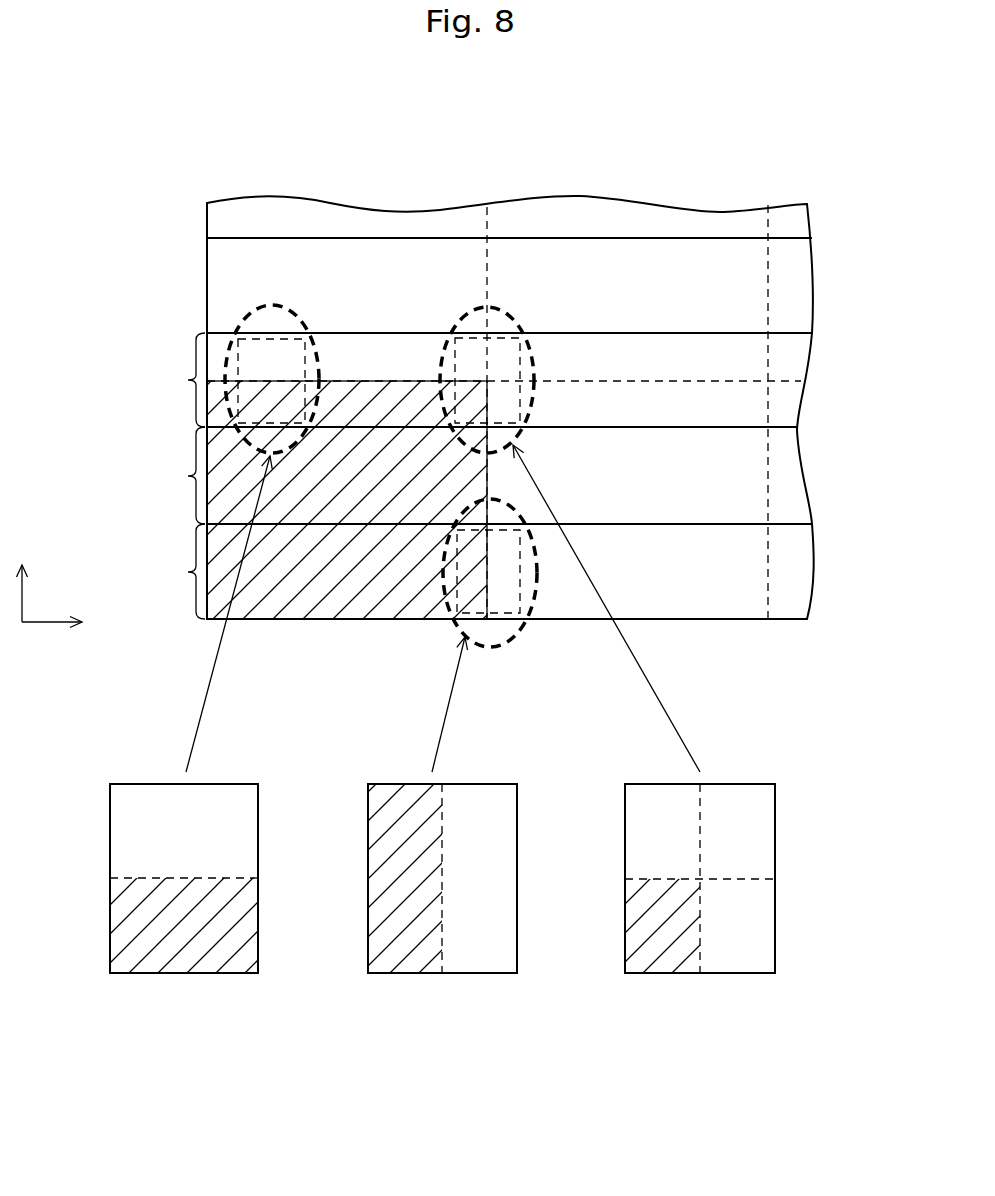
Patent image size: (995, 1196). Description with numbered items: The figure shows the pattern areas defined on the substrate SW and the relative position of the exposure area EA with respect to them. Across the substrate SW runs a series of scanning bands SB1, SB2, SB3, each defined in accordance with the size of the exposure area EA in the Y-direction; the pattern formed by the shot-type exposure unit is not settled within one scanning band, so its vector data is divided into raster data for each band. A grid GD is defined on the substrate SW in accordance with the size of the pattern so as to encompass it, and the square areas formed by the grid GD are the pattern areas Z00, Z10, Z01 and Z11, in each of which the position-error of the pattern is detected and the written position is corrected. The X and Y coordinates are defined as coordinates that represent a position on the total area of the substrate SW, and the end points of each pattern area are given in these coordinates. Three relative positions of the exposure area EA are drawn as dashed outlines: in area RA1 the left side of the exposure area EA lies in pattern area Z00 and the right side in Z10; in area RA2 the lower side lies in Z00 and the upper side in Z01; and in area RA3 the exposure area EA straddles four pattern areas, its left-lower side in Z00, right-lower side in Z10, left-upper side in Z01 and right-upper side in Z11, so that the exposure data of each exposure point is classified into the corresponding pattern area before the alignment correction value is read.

The substrate SW is at (177, 272).
The exposure area EA is at (265, 332).
The area RA1 is at (510, 505).
The area RA2 is at (297, 310).
The area RA3 is at (517, 324).
The grid GD is at (713, 381).
The scanning band SB1 is at (167, 571).
The scanning band SB2 is at (167, 475).
The scanning band SB3 is at (167, 380).
The pattern area Z00 is at (672, 1003).
The pattern area Z01 is at (647, 808).
The pattern area Z10 is at (733, 578).
The pattern area Z11 is at (669, 220).
The exposure point coordinate X is at (63, 619).
The exposure point coordinate Y is at (23, 572).